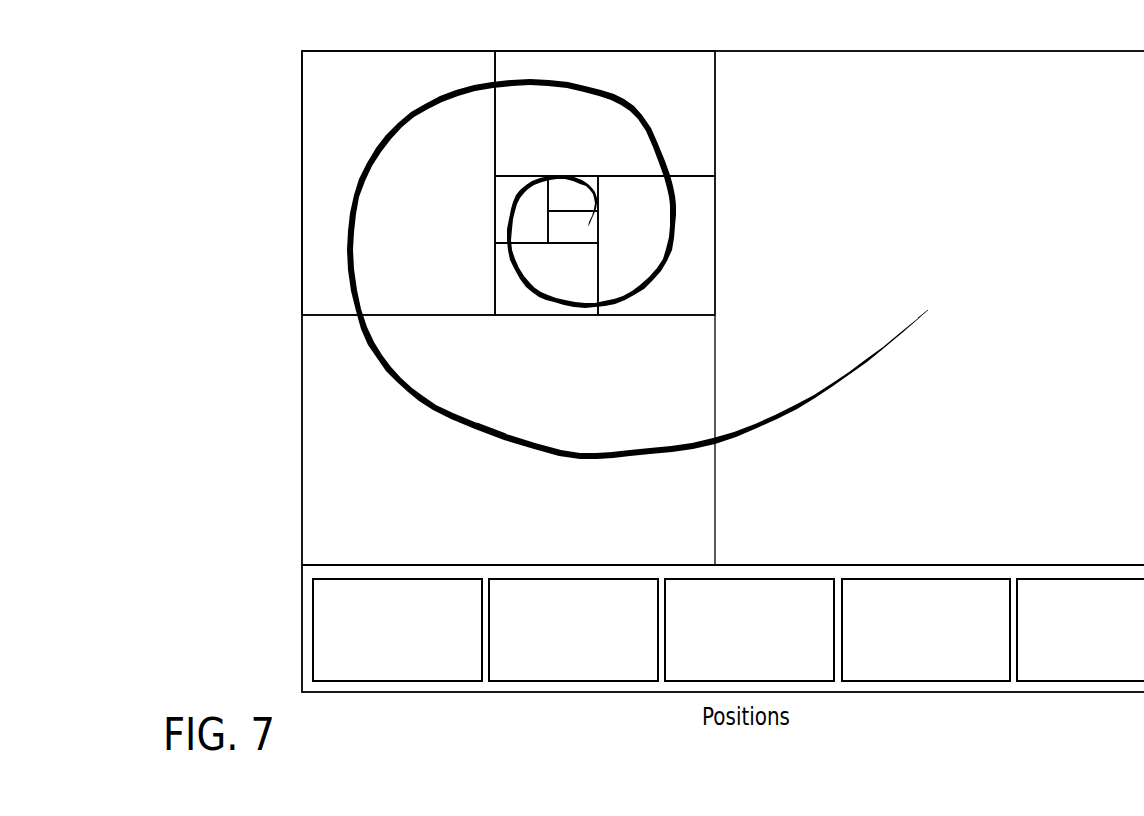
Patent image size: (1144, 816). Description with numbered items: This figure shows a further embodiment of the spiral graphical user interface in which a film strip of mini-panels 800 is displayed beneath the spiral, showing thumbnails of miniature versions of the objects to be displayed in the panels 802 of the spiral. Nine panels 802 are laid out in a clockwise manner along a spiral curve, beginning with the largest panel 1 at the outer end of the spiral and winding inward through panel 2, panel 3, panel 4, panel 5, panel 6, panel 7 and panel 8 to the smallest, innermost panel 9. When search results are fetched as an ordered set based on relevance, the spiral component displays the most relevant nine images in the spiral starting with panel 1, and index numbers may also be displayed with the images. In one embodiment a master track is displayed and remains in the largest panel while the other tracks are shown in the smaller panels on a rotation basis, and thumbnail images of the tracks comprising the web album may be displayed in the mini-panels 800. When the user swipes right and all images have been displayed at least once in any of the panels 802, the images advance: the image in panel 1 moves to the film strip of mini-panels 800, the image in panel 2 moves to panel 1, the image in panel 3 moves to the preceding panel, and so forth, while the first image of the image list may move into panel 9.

The film strip of mini-panels 800 is at (302, 633).
The panels of the spiral 802 is at (313, 302).
The panel 1 is at (919, 297).
The panel 2 is at (491, 421).
The panel 3 is at (398, 183).
The panel 4 is at (605, 113).
The panel 5 is at (656, 245).
The panel 6 is at (546, 279).
The panel 7 is at (521, 209).
The panel 8 is at (573, 193).
The panel 9 is at (573, 227).